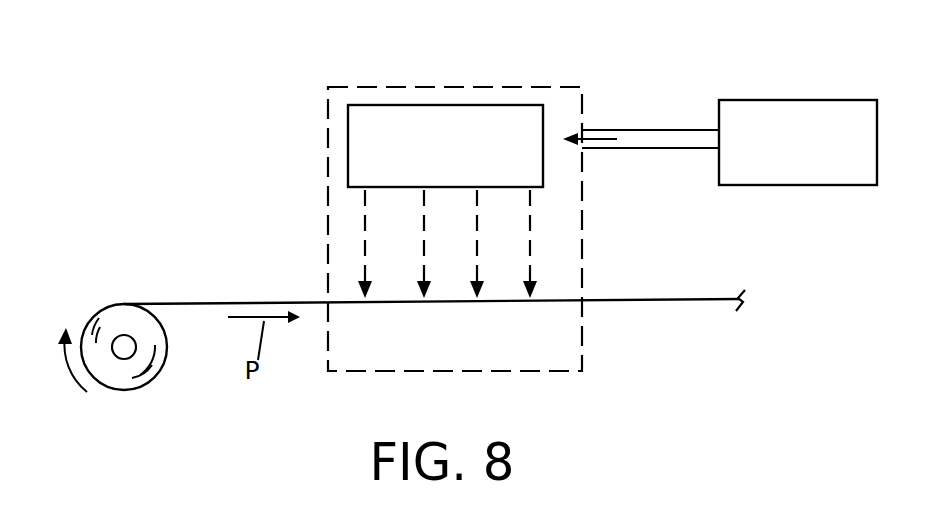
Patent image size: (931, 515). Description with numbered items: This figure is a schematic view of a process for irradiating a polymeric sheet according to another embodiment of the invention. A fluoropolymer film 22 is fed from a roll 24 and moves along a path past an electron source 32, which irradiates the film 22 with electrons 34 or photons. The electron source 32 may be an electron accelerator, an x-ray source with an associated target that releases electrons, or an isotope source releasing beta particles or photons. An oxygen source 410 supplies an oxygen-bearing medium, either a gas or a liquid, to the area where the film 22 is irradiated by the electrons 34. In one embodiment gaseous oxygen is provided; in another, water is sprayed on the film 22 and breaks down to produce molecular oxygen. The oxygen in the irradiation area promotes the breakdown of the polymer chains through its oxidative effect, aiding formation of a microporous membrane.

The fluoropolymer film 22 is at (221, 302).
The roll 24 is at (140, 367).
The electron source 32 is at (348, 147).
The electrons 34 is at (424, 235).
The oxygen source 410 is at (808, 100).